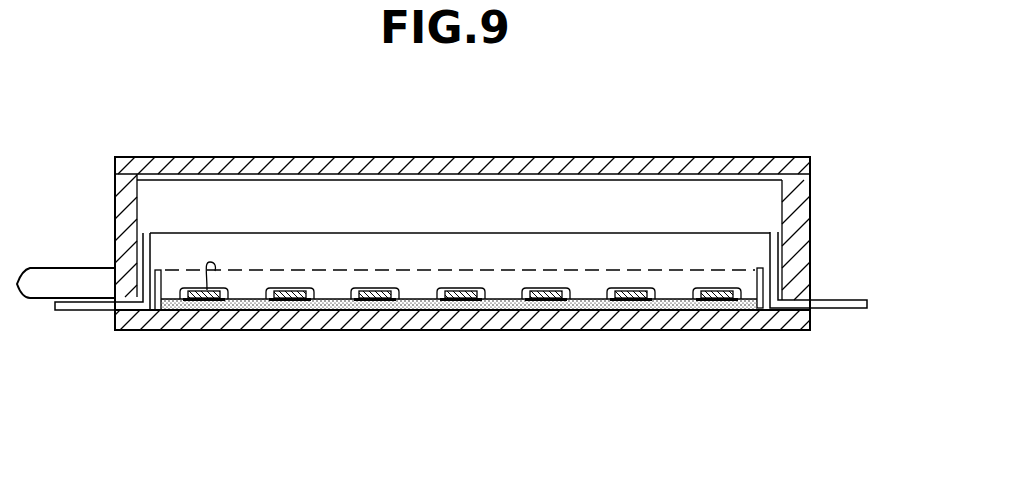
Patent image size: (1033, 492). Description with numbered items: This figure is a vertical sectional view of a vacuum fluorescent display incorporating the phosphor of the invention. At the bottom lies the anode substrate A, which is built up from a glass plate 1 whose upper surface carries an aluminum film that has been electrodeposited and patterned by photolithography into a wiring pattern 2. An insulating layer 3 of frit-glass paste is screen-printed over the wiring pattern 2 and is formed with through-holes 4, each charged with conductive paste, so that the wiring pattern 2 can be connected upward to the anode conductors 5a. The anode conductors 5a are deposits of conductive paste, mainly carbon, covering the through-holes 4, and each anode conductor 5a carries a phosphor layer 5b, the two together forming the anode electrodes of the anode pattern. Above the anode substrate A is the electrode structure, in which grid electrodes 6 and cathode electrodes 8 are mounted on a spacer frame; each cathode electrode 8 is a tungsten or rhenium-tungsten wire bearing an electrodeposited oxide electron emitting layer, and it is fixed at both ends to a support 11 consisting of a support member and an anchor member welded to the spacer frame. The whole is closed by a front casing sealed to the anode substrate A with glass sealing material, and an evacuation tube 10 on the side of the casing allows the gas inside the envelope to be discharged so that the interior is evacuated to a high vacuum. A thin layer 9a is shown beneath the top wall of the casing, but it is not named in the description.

The glass plate 1 is at (553, 322).
The wiring pattern 2 is at (464, 300).
The insulating layer 3 is at (410, 309).
The through-holes 4 is at (376, 308).
The anode conductors 5a is at (305, 310).
The phosphor layer 5b is at (293, 288).
The grid electrodes 6 is at (207, 290).
The cathode electrodes 8 is at (660, 233).
The inner lid plate 9a is at (414, 180).
The evacuation tube 10 is at (83, 277).
The support 11 is at (703, 138).
The anode substrate A is at (695, 330).